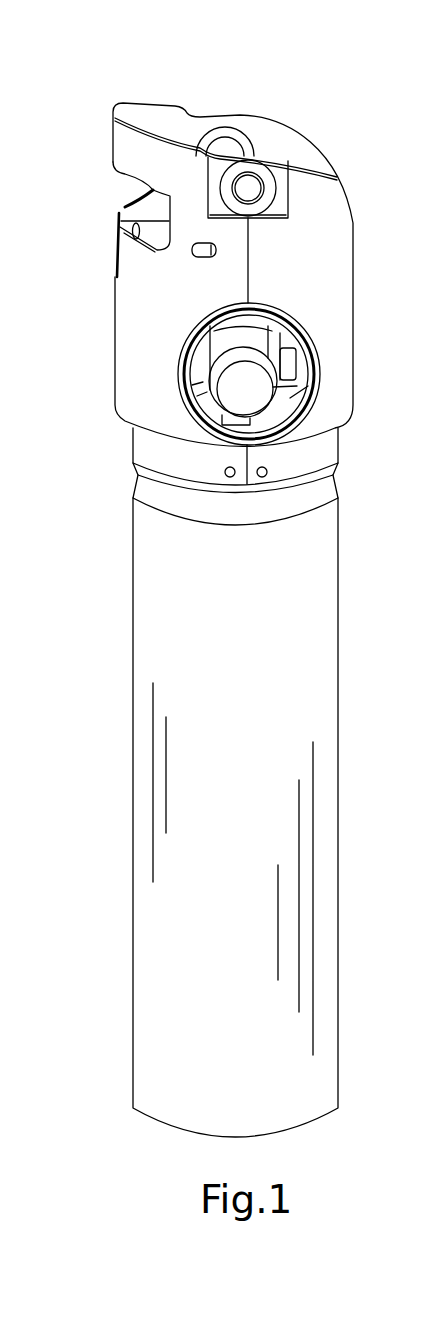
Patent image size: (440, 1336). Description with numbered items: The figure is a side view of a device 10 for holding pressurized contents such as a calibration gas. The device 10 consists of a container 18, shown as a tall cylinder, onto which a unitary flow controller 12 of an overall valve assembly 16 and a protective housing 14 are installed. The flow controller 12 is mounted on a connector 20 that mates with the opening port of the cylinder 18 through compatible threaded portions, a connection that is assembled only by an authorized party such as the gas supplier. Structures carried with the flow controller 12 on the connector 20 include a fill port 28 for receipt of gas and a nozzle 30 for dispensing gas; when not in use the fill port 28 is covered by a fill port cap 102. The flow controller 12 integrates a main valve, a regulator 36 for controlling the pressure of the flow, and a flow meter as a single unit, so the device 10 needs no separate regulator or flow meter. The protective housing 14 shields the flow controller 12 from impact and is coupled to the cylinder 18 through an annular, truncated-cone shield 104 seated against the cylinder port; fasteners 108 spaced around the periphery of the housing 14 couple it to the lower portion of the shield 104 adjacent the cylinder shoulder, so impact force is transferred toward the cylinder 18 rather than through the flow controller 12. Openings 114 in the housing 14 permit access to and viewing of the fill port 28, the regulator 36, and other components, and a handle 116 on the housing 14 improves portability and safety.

The device 10 is at (93, 36).
The unitary flow controller 12 is at (200, 318).
The protective housing 14 is at (282, 114).
The valve assembly 16 is at (134, 201).
The container 18 is at (168, 623).
The connector 20 is at (296, 321).
The fill port 28 is at (182, 368).
The nozzle 30 is at (122, 219).
The regulator 36 is at (258, 320).
The fill port cap 102 is at (252, 402).
The shield 104 is at (330, 470).
The fasteners 108 is at (262, 478).
The openings 114 is at (90, 183).
The handle 116 is at (127, 107).